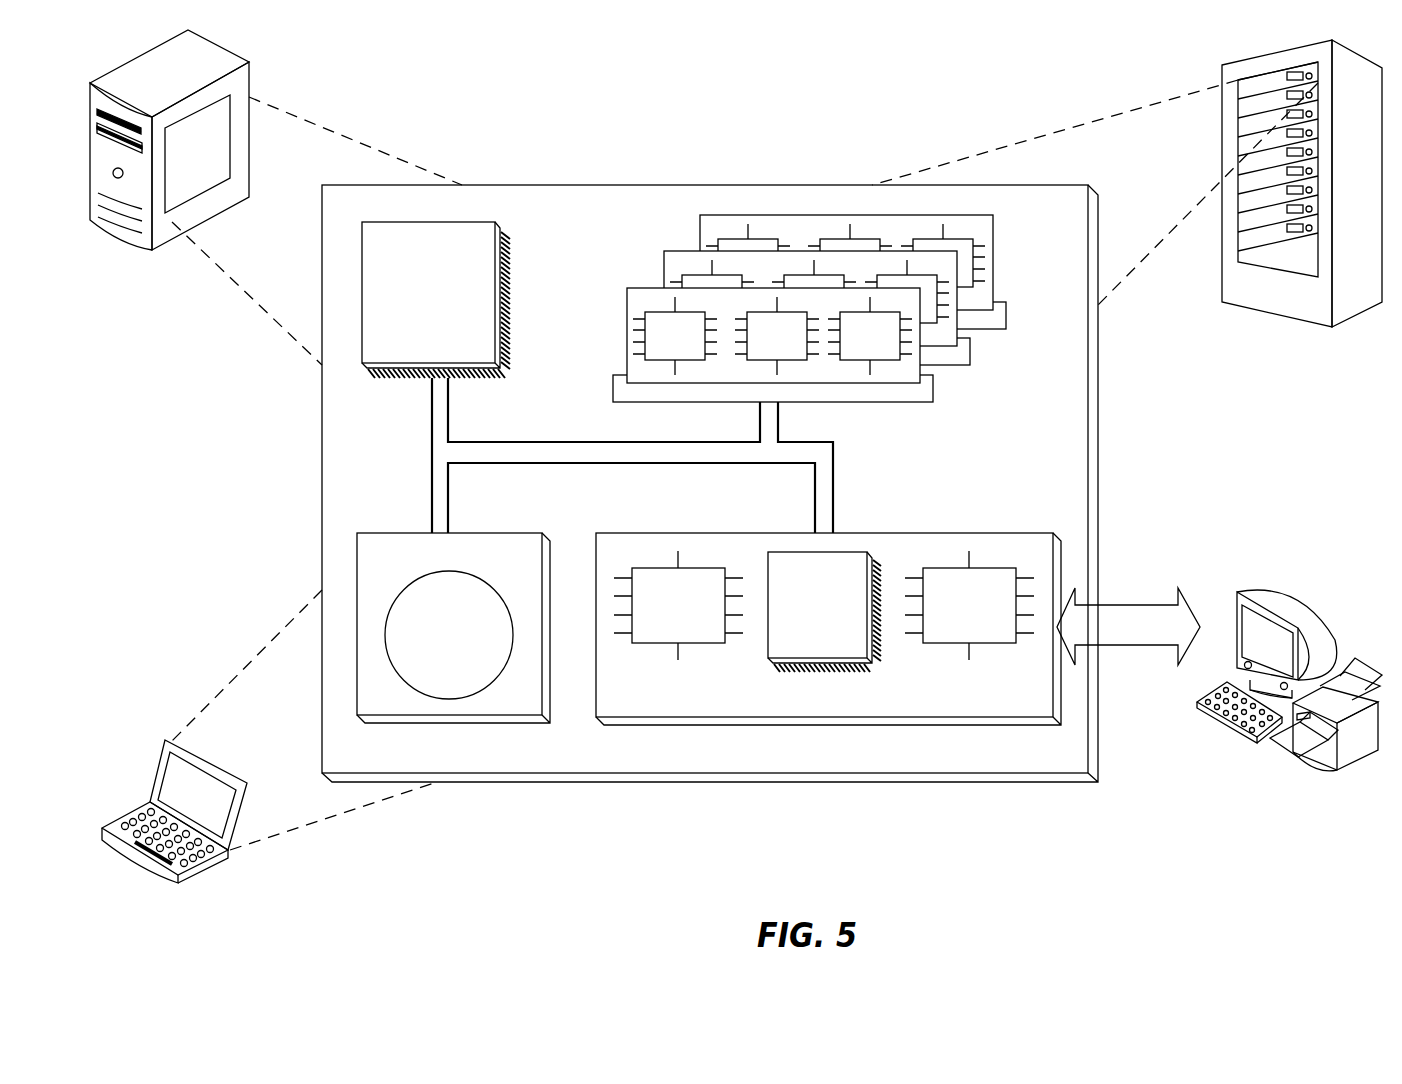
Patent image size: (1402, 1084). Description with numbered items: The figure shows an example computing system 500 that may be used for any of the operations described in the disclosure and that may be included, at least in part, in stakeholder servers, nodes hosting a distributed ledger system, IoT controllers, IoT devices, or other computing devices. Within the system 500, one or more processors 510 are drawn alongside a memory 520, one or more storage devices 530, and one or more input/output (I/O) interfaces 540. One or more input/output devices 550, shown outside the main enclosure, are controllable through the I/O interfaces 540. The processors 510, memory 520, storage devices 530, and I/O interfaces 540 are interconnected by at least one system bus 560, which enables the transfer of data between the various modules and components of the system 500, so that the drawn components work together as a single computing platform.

The computing system 500 is at (527, 103).
The processor 510 is at (484, 355).
The memory 520 is at (997, 358).
The storage device 530 is at (530, 708).
The I/O interface 540 is at (938, 706).
The input/output device 550 is at (1234, 600).
The system bus 560 is at (631, 466).